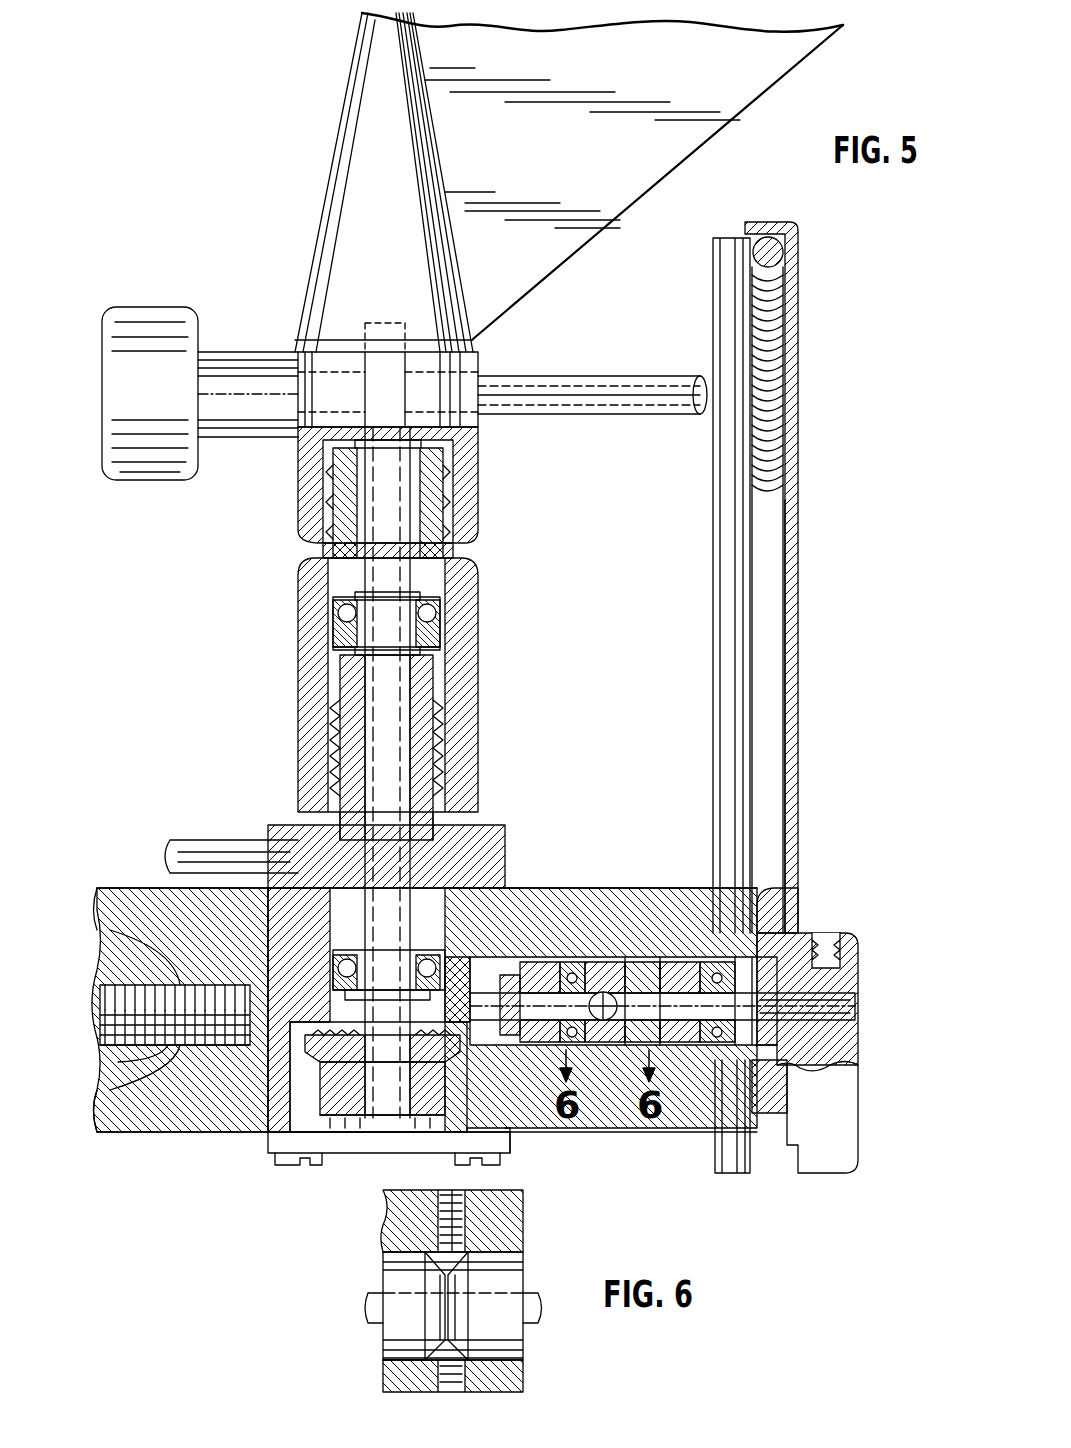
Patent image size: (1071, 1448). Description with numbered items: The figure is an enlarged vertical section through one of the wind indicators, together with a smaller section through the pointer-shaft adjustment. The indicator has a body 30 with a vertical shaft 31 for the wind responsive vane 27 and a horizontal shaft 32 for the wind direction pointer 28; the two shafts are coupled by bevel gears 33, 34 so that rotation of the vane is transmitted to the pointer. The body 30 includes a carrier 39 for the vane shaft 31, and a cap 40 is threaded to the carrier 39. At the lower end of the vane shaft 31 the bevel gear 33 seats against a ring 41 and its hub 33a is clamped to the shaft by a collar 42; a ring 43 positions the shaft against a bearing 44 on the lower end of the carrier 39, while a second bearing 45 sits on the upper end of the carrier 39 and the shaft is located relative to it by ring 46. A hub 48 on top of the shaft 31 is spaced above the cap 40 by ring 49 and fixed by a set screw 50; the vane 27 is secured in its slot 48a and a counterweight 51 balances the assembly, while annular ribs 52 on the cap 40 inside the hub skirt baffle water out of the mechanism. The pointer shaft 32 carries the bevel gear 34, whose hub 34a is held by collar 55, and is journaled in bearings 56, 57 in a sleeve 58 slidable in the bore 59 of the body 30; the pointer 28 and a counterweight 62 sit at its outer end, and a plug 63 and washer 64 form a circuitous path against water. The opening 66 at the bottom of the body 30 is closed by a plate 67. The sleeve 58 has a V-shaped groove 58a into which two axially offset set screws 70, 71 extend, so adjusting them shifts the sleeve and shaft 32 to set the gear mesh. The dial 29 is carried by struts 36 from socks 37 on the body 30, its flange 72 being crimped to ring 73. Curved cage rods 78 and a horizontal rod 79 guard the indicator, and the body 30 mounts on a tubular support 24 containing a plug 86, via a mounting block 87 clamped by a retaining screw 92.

In FIG. 5, the tubular support 24 is at (133, 895).
In FIG. 5, the wind responsive vane 27 is at (738, 97).
In FIG. 5, the wind direction pointer 28 is at (790, 595).
In FIG. 5, the dial 29 is at (795, 340).
In FIG. 5, the body 30 is at (290, 1095).
In FIG. 5, the vertical shaft 31 is at (387, 705).
In FIG. 5, the horizontal shaft 32 is at (835, 1003).
In FIG. 6, the horizontal shaft 32 is at (538, 1300).
In FIG. 5, the bevel gear 33 is at (300, 1035).
In FIG. 5, the hub 33a is at (330, 1140).
In FIG. 5, the bevel gear 34 is at (505, 1128).
In FIG. 5, the gear hub 34a is at (545, 880).
In FIG. 5, the strut 36 is at (735, 530).
In FIG. 5, the sock 37 is at (725, 900).
In FIG. 5, the carrier 39 is at (345, 805).
In FIG. 5, the cap 40 is at (310, 600).
In FIG. 5, the ring 41 is at (380, 1085).
In FIG. 5, the collar 42 is at (440, 1100).
In FIG. 5, the ring 43 is at (462, 985).
In FIG. 5, the bearing 44 is at (407, 945).
In FIG. 5, the second bearing 45 is at (345, 620).
In FIG. 5, the ring 46 is at (420, 610).
In FIG. 5, the hub 48 is at (352, 175).
In FIG. 5, the slot 48a is at (478, 515).
In FIG. 5, the ring 49 is at (385, 455).
In FIG. 5, the set screw 50 is at (478, 432).
In FIG. 5, the counterweight 51 is at (145, 470).
In FIG. 5, the annular ribs 52 is at (330, 510).
In FIG. 5, the collar 55 is at (512, 880).
In FIG. 5, the bearing 56 is at (568, 890).
In FIG. 5, the bearing 57 is at (718, 1042).
In FIG. 5, the sleeve 58 is at (660, 880).
In FIG. 6, the sleeve 58 is at (505, 1340).
In FIG. 5, the V-shaped groove 58a is at (627, 890).
In FIG. 6, the V-shaped groove 58a is at (420, 1285).
In FIG. 5, the bore 59 is at (605, 1060).
In FIG. 5, the counterweight 62 is at (845, 1115).
In FIG. 5, the plug 63 is at (790, 935).
In FIG. 5, the washer 64 is at (745, 935).
In FIG. 5, the opening 66 is at (300, 1100).
In FIG. 5, the plate 67 is at (278, 1140).
In FIG. 6, the set screw 70 is at (468, 1230).
In FIG. 6, the set screw 71 is at (490, 1372).
In FIG. 5, the flange 72 is at (762, 222).
In FIG. 5, the ring 73 is at (800, 232).
In FIG. 5, the curved rod 78 is at (205, 850).
In FIG. 5, the curved rod 79 is at (610, 385).
In FIG. 5, the plug 86 is at (130, 1060).
In FIG. 5, the mounting block 87 is at (118, 1132).
In FIG. 5, the retaining screw 92 is at (112, 898).